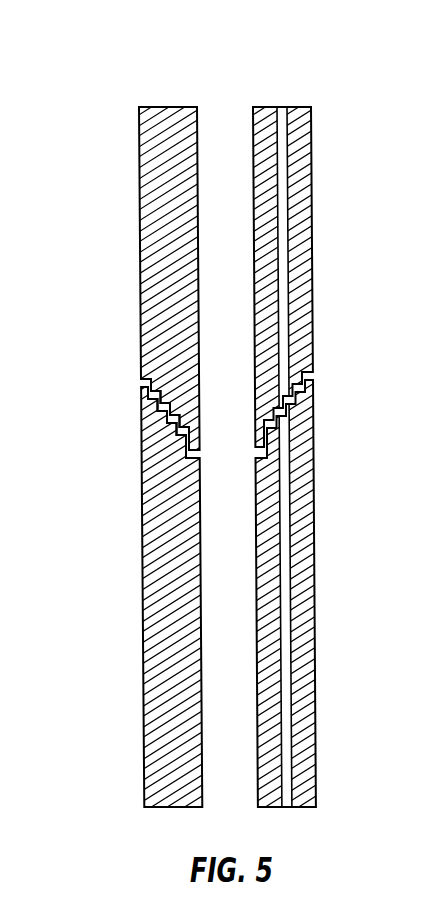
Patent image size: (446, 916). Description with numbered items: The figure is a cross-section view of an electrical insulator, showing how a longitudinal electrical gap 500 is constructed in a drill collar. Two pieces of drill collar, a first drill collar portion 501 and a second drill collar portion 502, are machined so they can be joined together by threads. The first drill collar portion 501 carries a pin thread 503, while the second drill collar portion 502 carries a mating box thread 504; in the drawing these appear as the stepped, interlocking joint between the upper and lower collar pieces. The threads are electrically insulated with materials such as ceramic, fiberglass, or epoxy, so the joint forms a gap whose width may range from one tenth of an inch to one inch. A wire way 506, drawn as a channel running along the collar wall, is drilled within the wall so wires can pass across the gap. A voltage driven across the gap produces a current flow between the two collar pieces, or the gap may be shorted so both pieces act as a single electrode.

The longitudinal electrical gap 500 is at (223, 431).
The first drill collar portion 501 is at (141, 155).
The second drill collar portion 502 is at (143, 551).
The pin thread 503 is at (146, 378).
The box thread 504 is at (162, 413).
The wire way 506 is at (287, 645).